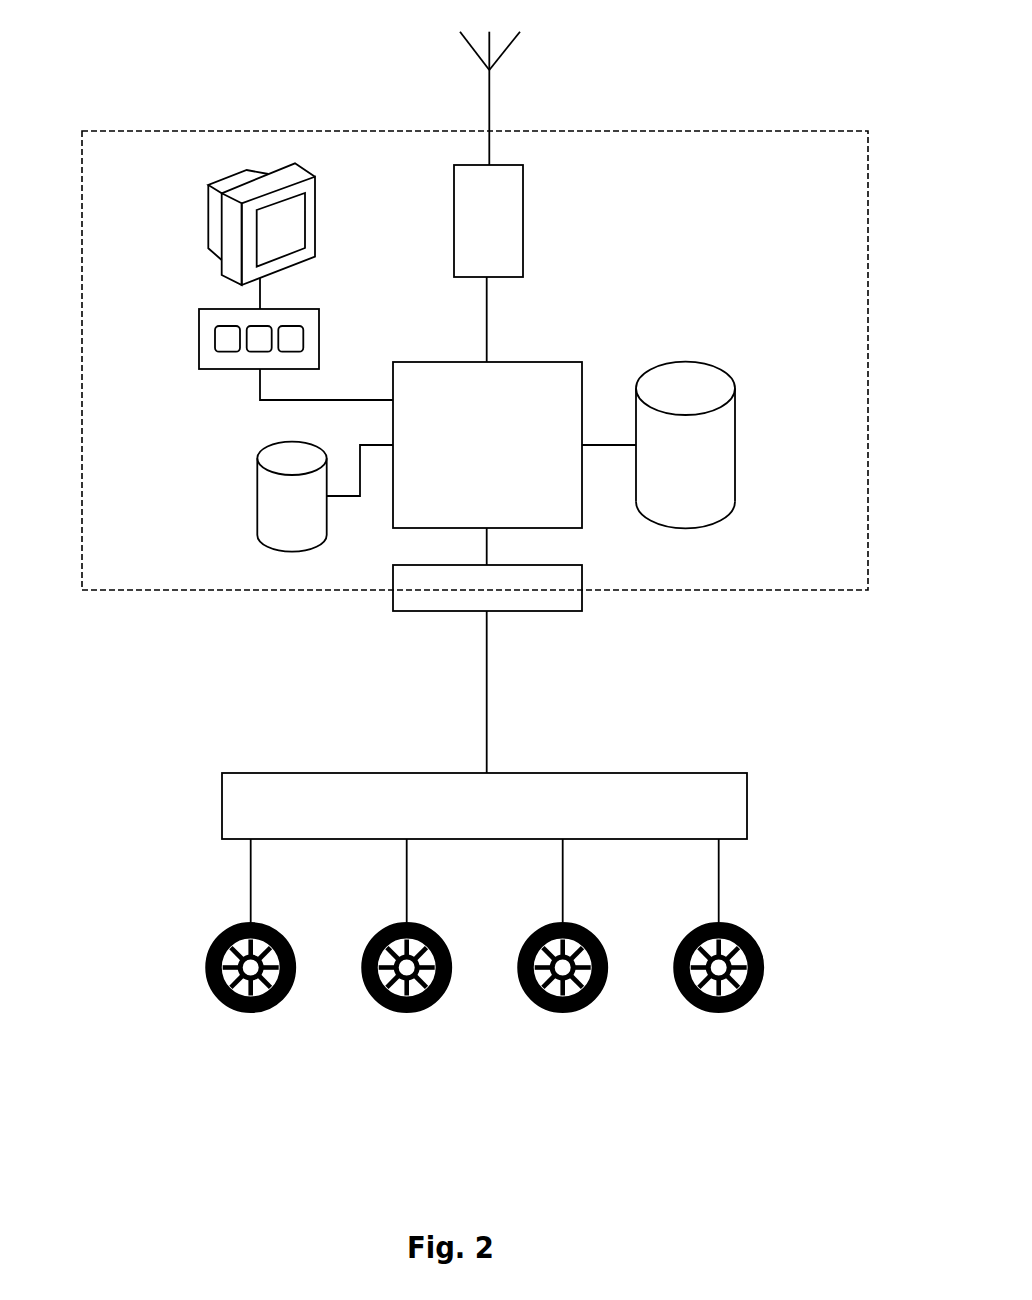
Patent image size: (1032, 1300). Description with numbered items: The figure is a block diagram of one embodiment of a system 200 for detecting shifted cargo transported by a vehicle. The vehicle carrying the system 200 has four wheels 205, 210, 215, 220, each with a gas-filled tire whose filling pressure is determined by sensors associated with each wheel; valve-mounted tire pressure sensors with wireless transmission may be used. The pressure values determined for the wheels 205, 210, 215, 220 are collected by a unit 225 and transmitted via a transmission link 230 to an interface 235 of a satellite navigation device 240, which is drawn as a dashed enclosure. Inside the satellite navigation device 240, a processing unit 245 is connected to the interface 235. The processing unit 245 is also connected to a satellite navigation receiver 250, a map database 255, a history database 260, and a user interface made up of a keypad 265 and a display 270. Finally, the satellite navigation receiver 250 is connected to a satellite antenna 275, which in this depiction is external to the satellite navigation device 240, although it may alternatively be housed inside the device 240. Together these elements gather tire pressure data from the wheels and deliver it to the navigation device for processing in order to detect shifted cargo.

The system 200 is at (751, 82).
The wheel 205 is at (251, 962).
The wheel 210 is at (407, 962).
The wheel 215 is at (563, 962).
The wheel 220 is at (719, 962).
The unit 225 is at (747, 805).
The transmission link 230 is at (490, 698).
The interface 235 is at (583, 587).
The satellite navigation device 240 is at (727, 590).
The processing unit 245 is at (582, 368).
The satellite navigation receiver 250 is at (454, 222).
The map database 255 is at (735, 445).
The history database 260 is at (257, 495).
The keypad 265 is at (198, 340).
The display 270 is at (207, 222).
The satellite antenna 275 is at (495, 97).